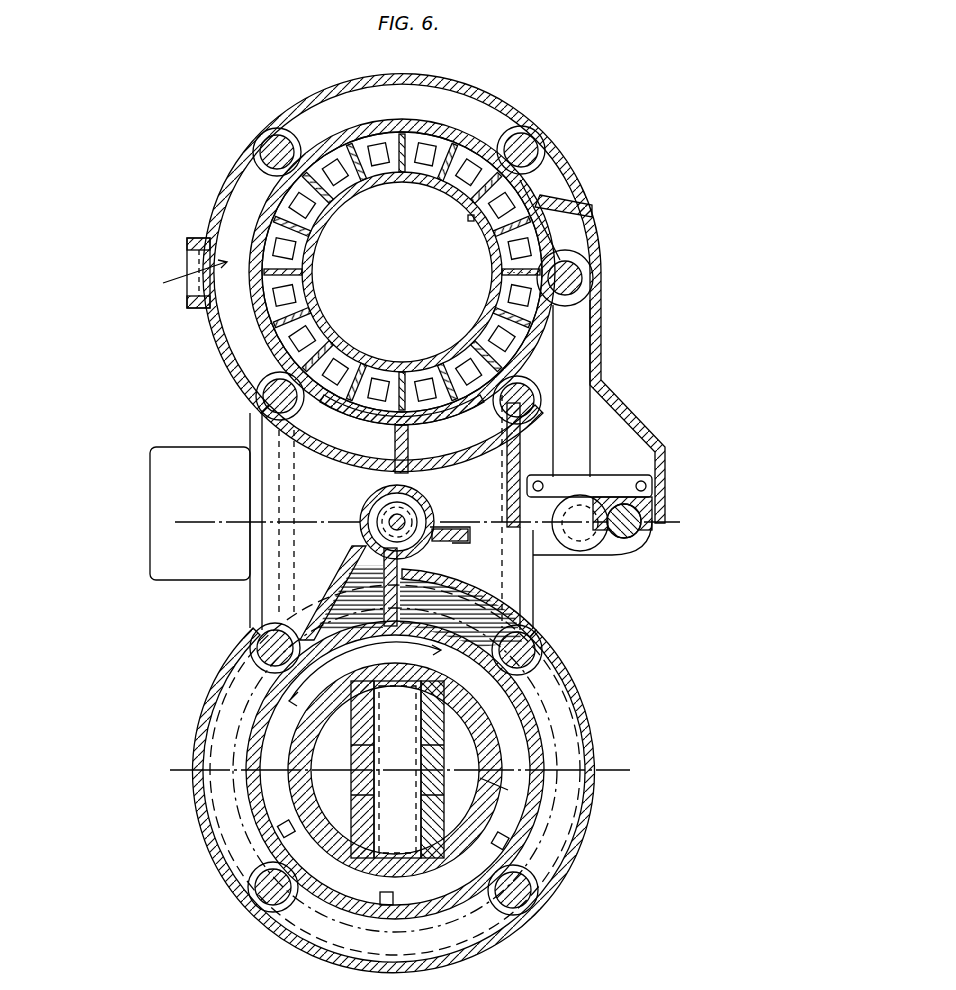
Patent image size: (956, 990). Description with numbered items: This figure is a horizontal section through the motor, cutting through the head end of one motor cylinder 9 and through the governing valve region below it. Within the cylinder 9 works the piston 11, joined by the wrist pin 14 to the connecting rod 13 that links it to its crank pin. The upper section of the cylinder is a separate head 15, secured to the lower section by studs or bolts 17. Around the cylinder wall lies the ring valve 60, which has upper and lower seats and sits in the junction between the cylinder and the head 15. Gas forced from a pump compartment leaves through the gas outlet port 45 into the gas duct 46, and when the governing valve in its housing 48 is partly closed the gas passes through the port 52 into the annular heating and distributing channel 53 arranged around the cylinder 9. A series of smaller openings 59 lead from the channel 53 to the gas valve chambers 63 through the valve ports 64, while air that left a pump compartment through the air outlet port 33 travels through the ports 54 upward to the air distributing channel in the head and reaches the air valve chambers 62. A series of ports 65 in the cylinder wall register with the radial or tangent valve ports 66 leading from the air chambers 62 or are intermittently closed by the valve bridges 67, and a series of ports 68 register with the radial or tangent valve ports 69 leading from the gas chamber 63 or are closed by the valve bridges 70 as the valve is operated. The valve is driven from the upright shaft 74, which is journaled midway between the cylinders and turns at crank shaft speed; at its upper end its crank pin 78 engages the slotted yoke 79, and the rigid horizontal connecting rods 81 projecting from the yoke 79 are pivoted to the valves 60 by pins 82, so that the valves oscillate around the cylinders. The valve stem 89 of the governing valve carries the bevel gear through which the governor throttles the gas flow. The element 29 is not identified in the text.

The motor cylinder 9 is at (505, 755).
The piston 11 is at (346, 769).
The connecting rod 13 is at (445, 769).
The wrist pin 14 is at (397, 769).
The cylinder head 15 is at (490, 794).
The studs or bolts 17 is at (540, 150).
The inlet box 29 is at (150, 498).
The air outlet port 33 is at (372, 443).
The gas outlet port 45 is at (380, 563).
The gas duct 46 is at (372, 582).
The valve housing 48 is at (426, 516).
The port 52 is at (365, 673).
The annular heating and distributing channel 53 is at (505, 710).
The air port 54 is at (372, 445).
The smaller opening 59 is at (382, 940).
The ring valve 60 is at (383, 140).
The air valve chamber 62 is at (462, 166).
The gas valve chamber 63 is at (505, 196).
The valve port 64 is at (535, 217).
The cylinder wall port 65 is at (451, 203).
The radial or tangent valve port 66 is at (445, 173).
The valve bridge 67 is at (435, 152).
The cylinder wall port 68 is at (466, 241).
The radial or tangent valve port 69 is at (468, 215).
The valve bridge 70 is at (472, 172).
The upright shaft 74 is at (580, 542).
The crank pin 78 is at (652, 531).
The slotted yoke 79 is at (654, 488).
The connecting rod 81 is at (575, 441).
The pin 82 is at (583, 279).
The valve stem 89 is at (372, 518).